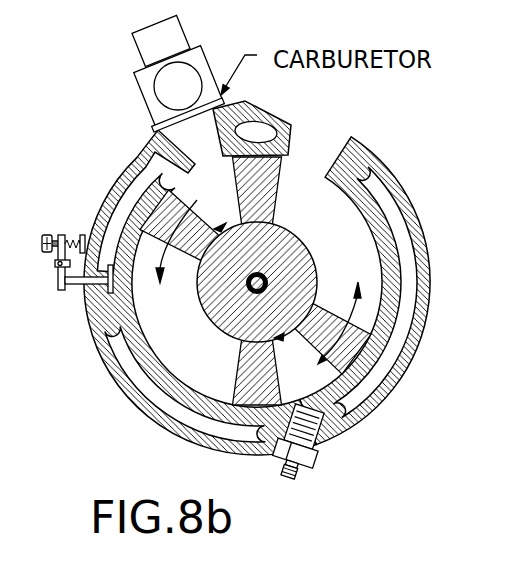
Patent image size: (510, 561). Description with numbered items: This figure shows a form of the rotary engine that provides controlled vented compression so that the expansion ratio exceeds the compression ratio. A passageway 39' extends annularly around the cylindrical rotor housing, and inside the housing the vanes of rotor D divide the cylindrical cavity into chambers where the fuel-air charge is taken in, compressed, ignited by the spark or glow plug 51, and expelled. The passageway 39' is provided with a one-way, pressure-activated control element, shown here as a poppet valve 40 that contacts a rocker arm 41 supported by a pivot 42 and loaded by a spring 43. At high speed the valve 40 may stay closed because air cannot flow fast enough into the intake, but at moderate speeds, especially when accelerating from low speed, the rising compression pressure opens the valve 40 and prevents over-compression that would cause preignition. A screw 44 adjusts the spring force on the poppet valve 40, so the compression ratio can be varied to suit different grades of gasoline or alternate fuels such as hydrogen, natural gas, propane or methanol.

The passageway 39' is at (199, 284).
The poppet valve 40 is at (100, 322).
The rocker arm 41 is at (66, 291).
The pivot 42 is at (58, 267).
The spring 43 is at (79, 233).
The screw 44 is at (50, 233).
The spark or glow plug 51 is at (331, 455).
The rotor D is at (274, 146).